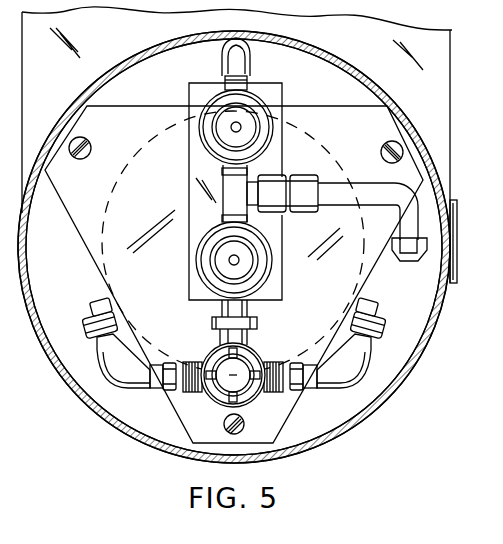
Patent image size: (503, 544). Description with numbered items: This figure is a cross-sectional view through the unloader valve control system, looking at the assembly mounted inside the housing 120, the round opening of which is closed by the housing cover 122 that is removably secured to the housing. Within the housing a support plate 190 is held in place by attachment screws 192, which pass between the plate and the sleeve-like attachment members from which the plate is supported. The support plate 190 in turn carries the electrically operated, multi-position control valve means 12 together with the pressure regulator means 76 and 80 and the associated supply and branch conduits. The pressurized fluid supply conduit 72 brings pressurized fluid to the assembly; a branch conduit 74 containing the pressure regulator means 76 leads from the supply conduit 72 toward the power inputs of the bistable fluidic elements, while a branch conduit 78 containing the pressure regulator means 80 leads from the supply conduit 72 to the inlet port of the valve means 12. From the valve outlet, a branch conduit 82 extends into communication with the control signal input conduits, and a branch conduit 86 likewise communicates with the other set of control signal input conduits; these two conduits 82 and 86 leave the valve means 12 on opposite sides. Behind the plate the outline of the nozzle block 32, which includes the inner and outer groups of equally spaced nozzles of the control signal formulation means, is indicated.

The multi-position control valve means 12 is at (200, 350).
The nozzle block 32 is at (100, 244).
The pressurized fluid supply conduit 72 is at (344, 181).
The branch conduit 74 is at (250, 72).
The pressure regulator means 76 is at (263, 113).
The branch conduit 78 is at (248, 308).
The pressure regulator means 80 is at (271, 271).
The branch conduit 82 is at (351, 363).
The branch conduit 86 is at (115, 358).
The housing 120 is at (440, 133).
The housing cover 122 is at (123, 57).
The support plate 190 is at (136, 106).
The attachment screws 192 is at (76, 141).